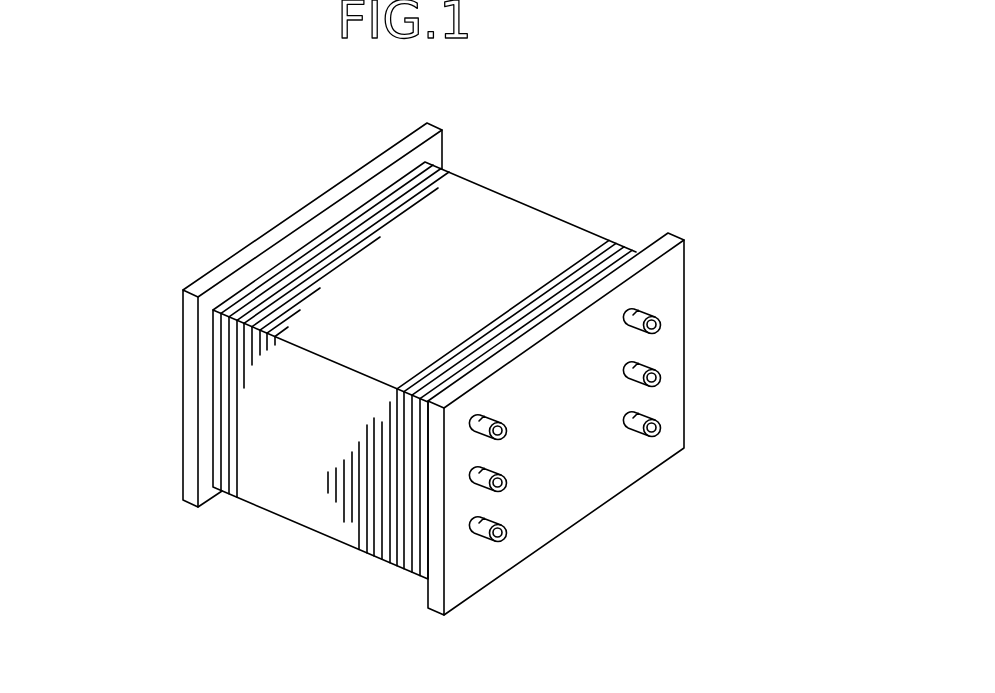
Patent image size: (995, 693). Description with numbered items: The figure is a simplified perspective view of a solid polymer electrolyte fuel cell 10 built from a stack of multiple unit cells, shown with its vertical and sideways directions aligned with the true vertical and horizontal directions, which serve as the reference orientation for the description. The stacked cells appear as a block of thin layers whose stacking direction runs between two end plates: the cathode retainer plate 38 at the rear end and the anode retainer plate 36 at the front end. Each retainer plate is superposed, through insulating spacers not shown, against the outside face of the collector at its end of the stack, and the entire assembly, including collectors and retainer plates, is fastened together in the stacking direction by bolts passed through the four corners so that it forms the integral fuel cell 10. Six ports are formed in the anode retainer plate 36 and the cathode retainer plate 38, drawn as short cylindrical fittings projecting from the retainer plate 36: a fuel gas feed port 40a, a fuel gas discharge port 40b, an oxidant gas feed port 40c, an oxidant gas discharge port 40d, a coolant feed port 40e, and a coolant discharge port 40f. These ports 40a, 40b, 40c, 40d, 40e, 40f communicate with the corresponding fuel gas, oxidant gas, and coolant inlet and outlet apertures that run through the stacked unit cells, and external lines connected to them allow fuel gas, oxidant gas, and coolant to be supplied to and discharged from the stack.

The solid polymer electrolyte fuel cell 10 is at (657, 146).
The cathode retainer plate 38 is at (190, 378).
The anode retainer plate 36 is at (578, 503).
The fuel gas feed port 40a is at (476, 427).
The fuel gas discharge port 40b is at (640, 414).
The oxidant gas feed port 40c is at (640, 312).
The oxidant gas discharge port 40d is at (480, 534).
The coolant feed port 40e is at (478, 482).
The coolant discharge port 40f is at (640, 366).